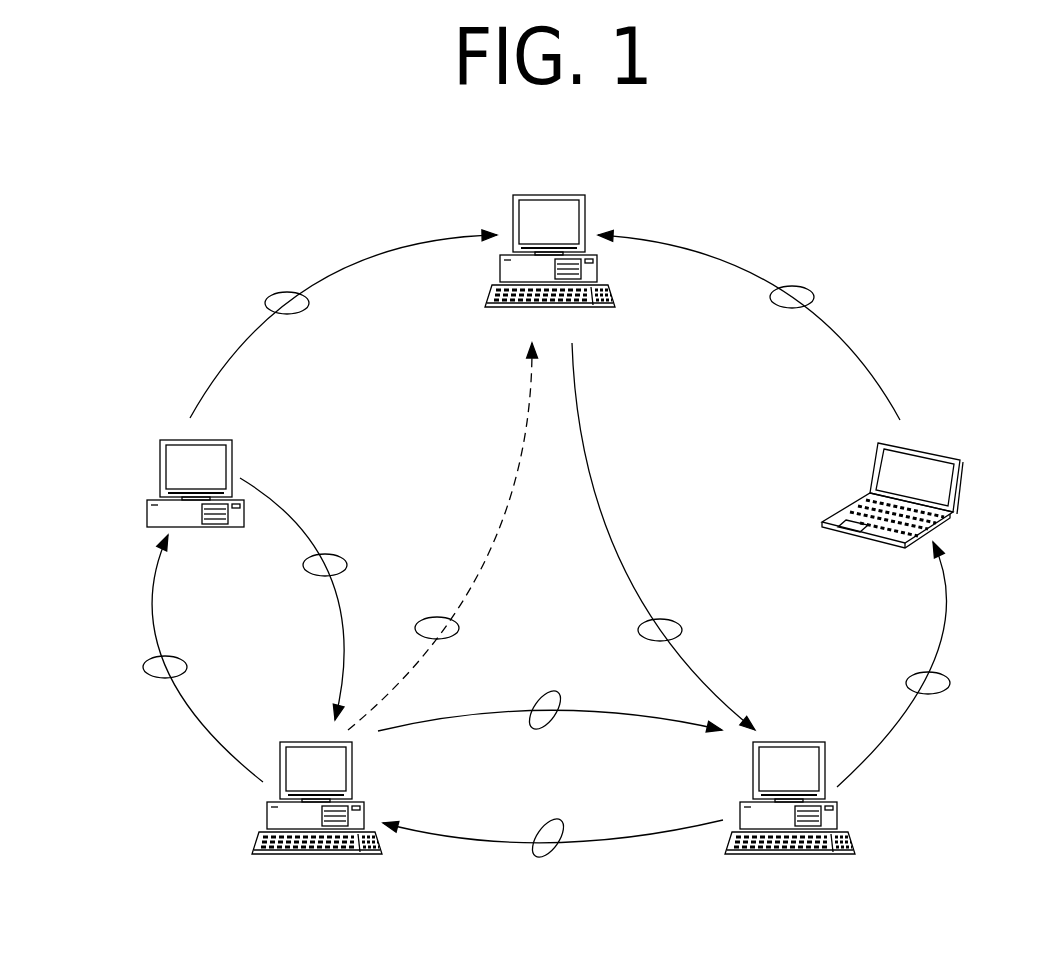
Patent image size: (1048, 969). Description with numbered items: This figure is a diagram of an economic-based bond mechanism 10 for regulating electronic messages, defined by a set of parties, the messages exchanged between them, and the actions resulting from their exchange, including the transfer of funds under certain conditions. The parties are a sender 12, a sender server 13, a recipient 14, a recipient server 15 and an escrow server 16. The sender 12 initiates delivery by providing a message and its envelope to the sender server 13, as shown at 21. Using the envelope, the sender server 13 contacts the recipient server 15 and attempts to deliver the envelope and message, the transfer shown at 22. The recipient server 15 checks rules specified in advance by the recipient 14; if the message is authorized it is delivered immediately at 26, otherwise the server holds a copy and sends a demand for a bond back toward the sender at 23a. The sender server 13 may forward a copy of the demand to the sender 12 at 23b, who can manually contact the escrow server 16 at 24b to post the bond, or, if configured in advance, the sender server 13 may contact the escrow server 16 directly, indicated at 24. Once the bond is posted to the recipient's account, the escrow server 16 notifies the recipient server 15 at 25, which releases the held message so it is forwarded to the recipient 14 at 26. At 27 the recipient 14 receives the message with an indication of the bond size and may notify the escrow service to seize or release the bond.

The economic mechanism 10 is at (822, 213).
The sender 12 is at (232, 441).
The sender server 13 is at (265, 810).
The recipient 14 is at (962, 478).
The recipient server 15 is at (838, 818).
The escrow server 16 is at (587, 205).
The message and envelope delivery to sender server 21 is at (347, 567).
The message transmission from sender mail server to recipient mail server 22 is at (530, 727).
The demand for bond message 23a is at (530, 853).
The forwarding of demand message to sender 23b is at (143, 667).
The transmission from sender mail server to escrow server 24 is at (459, 630).
The sender contacting escrow server 24b is at (309, 305).
The bond posted notification 25 is at (682, 632).
The message delivery to recipient 26 is at (950, 685).
The message receipt by recipient 27 is at (814, 300).